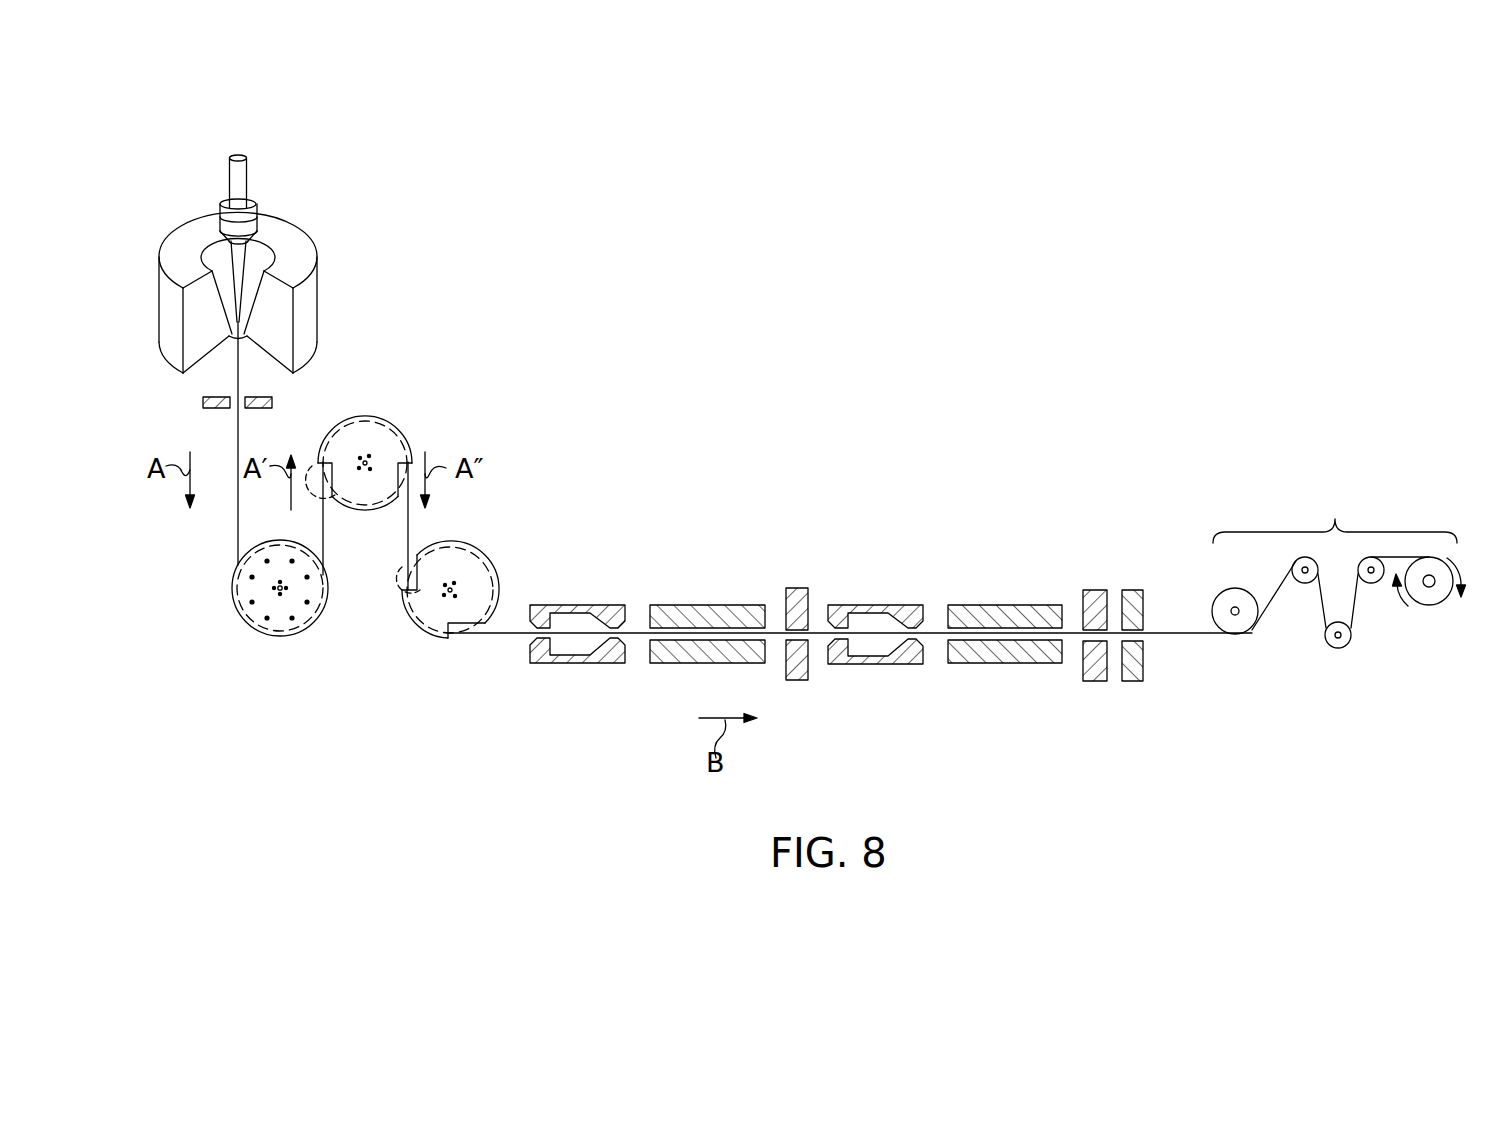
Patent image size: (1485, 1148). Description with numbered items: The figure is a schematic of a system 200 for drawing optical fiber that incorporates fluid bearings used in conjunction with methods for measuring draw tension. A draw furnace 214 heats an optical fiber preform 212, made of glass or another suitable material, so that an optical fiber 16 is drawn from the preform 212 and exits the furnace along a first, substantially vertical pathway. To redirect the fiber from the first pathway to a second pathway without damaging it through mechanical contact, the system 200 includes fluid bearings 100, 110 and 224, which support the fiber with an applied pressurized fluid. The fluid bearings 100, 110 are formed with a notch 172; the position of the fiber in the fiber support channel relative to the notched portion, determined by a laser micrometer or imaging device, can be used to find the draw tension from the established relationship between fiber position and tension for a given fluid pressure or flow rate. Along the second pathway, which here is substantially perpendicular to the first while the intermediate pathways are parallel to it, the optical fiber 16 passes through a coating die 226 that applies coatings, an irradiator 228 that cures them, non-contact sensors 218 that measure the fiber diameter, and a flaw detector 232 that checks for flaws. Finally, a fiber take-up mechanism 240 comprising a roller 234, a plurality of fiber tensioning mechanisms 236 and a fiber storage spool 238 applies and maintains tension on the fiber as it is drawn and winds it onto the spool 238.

The system for drawing optical fiber 200 is at (810, 450).
The optical fiber preform 212 is at (294, 216).
The draw furnace 214 is at (294, 286).
The optical fiber 16 is at (691, 532).
The non-contact sensors 218 is at (273, 402).
The fluid bearing 224 is at (222, 602).
The fluid bearing 100 is at (399, 419).
The notch 172 is at (322, 494).
The fluid bearing 110 is at (405, 638).
The coating die 226 is at (743, 586).
The irradiator 228 is at (856, 580).
The flaw detector 232 is at (1134, 590).
The fiber take-up mechanism 240 is at (1339, 615).
The capstan roller 234 is at (1239, 666).
The fiber tensioning mechanisms 236 is at (1305, 584).
The fiber storage spool 238 is at (1429, 635).